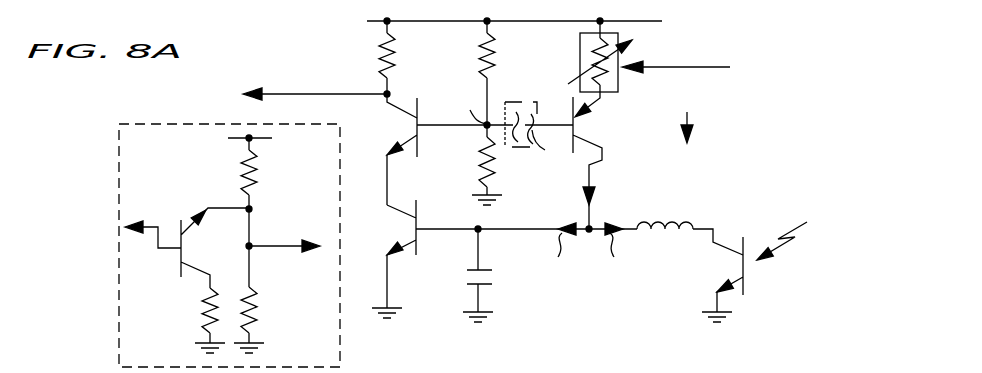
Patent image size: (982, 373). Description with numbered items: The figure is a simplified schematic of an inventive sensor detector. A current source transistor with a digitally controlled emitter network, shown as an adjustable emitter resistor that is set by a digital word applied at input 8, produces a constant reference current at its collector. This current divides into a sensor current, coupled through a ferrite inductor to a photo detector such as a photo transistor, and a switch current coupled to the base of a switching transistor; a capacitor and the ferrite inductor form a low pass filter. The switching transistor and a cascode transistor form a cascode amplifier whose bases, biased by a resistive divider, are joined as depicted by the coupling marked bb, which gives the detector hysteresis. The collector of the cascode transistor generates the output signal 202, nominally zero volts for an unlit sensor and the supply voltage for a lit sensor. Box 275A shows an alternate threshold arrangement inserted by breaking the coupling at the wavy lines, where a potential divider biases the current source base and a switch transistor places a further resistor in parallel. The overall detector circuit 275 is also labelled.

The data input line D 8 is at (683, 75).
The output signal 202 is at (291, 98).
The LED drive circuit 275 is at (775, 194).
The box 275A is at (518, 102).